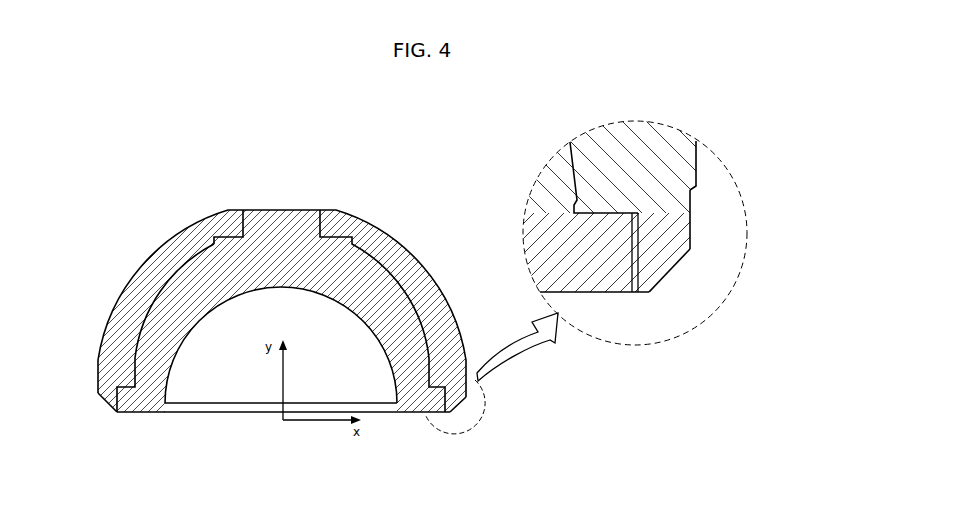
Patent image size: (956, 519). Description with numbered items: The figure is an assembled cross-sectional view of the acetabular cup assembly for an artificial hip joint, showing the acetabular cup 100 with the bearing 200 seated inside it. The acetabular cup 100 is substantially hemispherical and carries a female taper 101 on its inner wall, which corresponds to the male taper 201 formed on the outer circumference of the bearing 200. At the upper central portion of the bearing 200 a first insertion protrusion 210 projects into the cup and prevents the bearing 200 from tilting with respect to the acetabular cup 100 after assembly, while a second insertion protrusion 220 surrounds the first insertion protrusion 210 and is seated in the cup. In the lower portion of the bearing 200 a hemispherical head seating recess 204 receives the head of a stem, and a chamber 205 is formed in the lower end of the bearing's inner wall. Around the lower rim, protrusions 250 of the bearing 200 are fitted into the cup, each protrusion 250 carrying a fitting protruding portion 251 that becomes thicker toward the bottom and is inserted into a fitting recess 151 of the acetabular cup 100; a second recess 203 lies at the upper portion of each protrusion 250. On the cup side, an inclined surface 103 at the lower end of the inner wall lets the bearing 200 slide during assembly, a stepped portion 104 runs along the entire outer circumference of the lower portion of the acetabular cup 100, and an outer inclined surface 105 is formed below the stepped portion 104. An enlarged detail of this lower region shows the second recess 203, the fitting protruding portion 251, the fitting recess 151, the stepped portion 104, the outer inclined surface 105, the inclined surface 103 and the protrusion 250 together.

The acetabular cup 100 is at (390, 212).
The female taper 101 is at (138, 318).
The inclined surface 103 is at (632, 293).
The stepped portion 104 is at (692, 207).
The outer inclined surface 105 is at (676, 265).
The fitting recess 151 is at (639, 217).
The bearing 200 is at (131, 421).
The male taper 201 is at (141, 337).
The second recess 203 is at (573, 213).
The head seating recess 204 is at (221, 374).
The chamber 205 is at (165, 412).
The first insertion protrusion 210 is at (275, 208).
The second insertion protrusion 220 is at (218, 226).
The protrusion 250 is at (592, 293).
The fitting protruding portion 251 is at (692, 140).